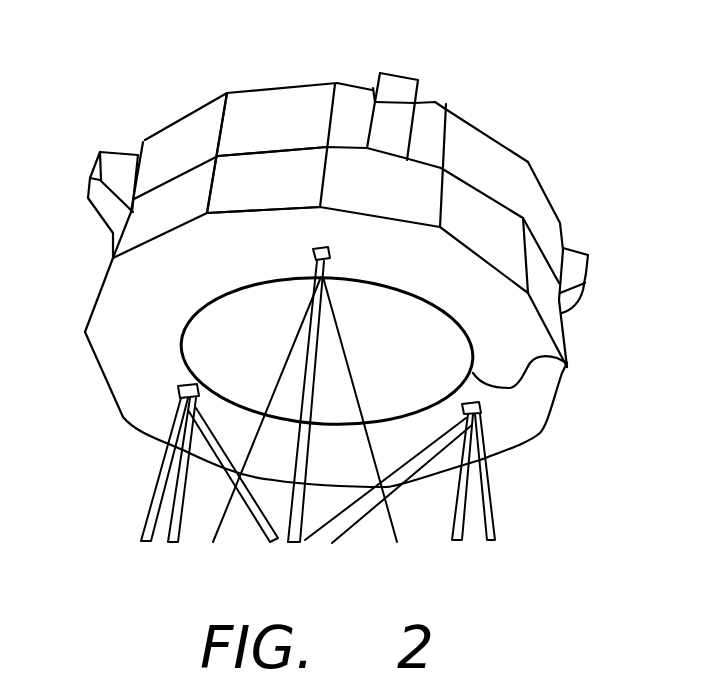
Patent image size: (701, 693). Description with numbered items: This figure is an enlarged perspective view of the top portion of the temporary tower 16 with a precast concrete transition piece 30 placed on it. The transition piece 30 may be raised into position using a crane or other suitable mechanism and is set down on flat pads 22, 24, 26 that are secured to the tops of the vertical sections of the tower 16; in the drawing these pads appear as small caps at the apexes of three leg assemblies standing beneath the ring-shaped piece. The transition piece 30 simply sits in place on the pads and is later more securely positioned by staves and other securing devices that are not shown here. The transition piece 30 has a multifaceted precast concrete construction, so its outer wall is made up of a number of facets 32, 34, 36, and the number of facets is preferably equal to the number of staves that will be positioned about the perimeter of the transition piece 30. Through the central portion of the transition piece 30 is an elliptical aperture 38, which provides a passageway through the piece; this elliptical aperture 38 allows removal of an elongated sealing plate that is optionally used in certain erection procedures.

The temporary tower 16 is at (155, 482).
The flat pad 22 is at (139, 451).
The flat pad 24 is at (323, 248).
The flat pad 26 is at (480, 408).
The transition piece 30 is at (547, 190).
The facet 32 is at (163, 197).
The facet 34 is at (262, 173).
The facet 36 is at (415, 187).
The elliptical aperture 38 is at (567, 363).